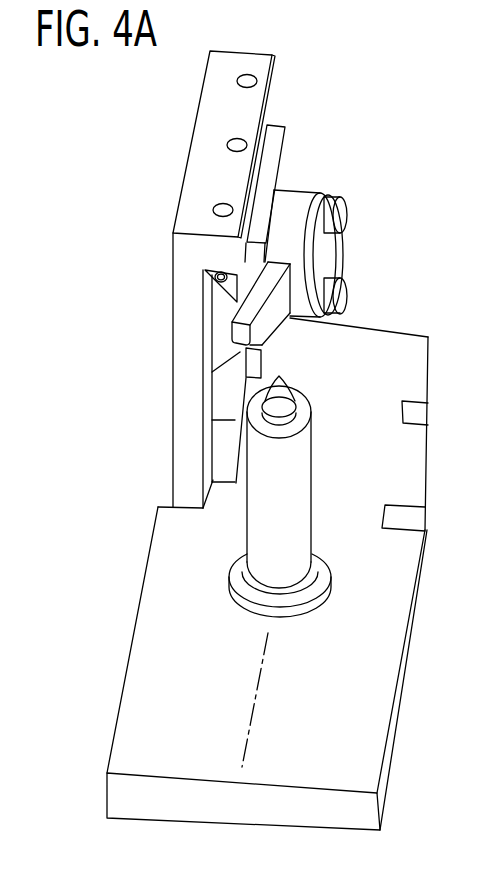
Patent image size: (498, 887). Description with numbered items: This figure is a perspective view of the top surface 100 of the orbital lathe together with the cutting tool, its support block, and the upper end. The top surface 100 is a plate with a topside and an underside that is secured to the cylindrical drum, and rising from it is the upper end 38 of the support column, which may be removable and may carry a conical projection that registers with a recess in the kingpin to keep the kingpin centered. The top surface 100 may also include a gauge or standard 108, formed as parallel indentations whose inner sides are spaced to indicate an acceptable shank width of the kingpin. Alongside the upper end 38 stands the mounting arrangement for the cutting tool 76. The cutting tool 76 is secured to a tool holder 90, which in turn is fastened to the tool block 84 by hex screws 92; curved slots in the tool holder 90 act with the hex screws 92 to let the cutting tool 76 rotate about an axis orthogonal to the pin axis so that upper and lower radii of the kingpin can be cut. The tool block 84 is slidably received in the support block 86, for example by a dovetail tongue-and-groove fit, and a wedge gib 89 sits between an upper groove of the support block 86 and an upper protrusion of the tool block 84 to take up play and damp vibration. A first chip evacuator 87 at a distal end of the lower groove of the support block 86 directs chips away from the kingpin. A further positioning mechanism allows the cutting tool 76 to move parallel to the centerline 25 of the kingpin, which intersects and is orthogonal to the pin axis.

The support block 86 is at (208, 176).
The tool block 84 is at (272, 148).
The tool holder 90 is at (332, 252).
The hex screws 92 is at (347, 212).
The cutting tool 76 is at (265, 322).
The wedge gib 89 is at (228, 295).
The first chip evacuator 87 is at (227, 387).
The top surface 100 is at (225, 688).
The gauge or standard 108 is at (382, 527).
The upper end 38 is at (298, 518).
The centerline 25 is at (255, 707).